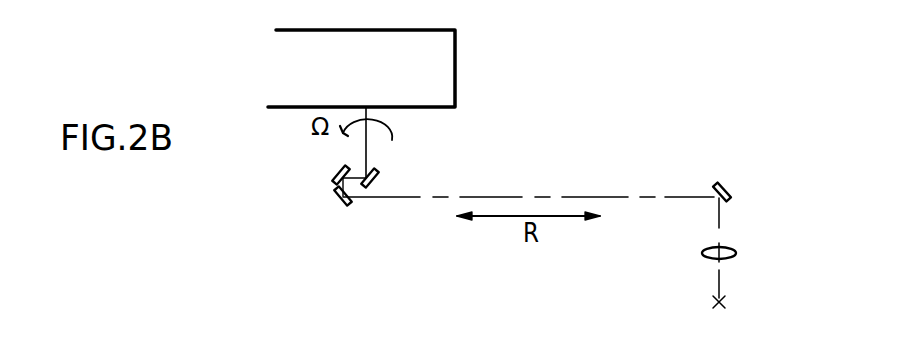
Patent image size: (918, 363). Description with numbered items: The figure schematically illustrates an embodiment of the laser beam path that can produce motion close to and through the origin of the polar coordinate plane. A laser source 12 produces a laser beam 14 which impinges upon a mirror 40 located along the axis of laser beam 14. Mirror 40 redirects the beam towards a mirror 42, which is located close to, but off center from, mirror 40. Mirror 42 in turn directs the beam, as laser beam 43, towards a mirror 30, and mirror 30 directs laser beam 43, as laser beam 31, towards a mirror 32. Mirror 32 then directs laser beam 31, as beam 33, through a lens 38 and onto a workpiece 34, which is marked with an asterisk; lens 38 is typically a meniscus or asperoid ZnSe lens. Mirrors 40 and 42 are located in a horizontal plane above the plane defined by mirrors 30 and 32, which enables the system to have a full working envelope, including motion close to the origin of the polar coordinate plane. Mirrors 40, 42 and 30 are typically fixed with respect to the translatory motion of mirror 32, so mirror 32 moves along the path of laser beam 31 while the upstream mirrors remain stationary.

The laser source 12 is at (443, 71).
The laser beam 14 is at (370, 157).
The mirror 30 is at (335, 202).
The laser beam 31 is at (510, 197).
The mirror 32 is at (728, 186).
The laser beam 33 is at (718, 228).
The workpiece 34 is at (725, 300).
The lens 38 is at (734, 256).
The mirror 40 is at (380, 182).
The mirror 42 is at (331, 170).
The laser beam 43 is at (345, 193).